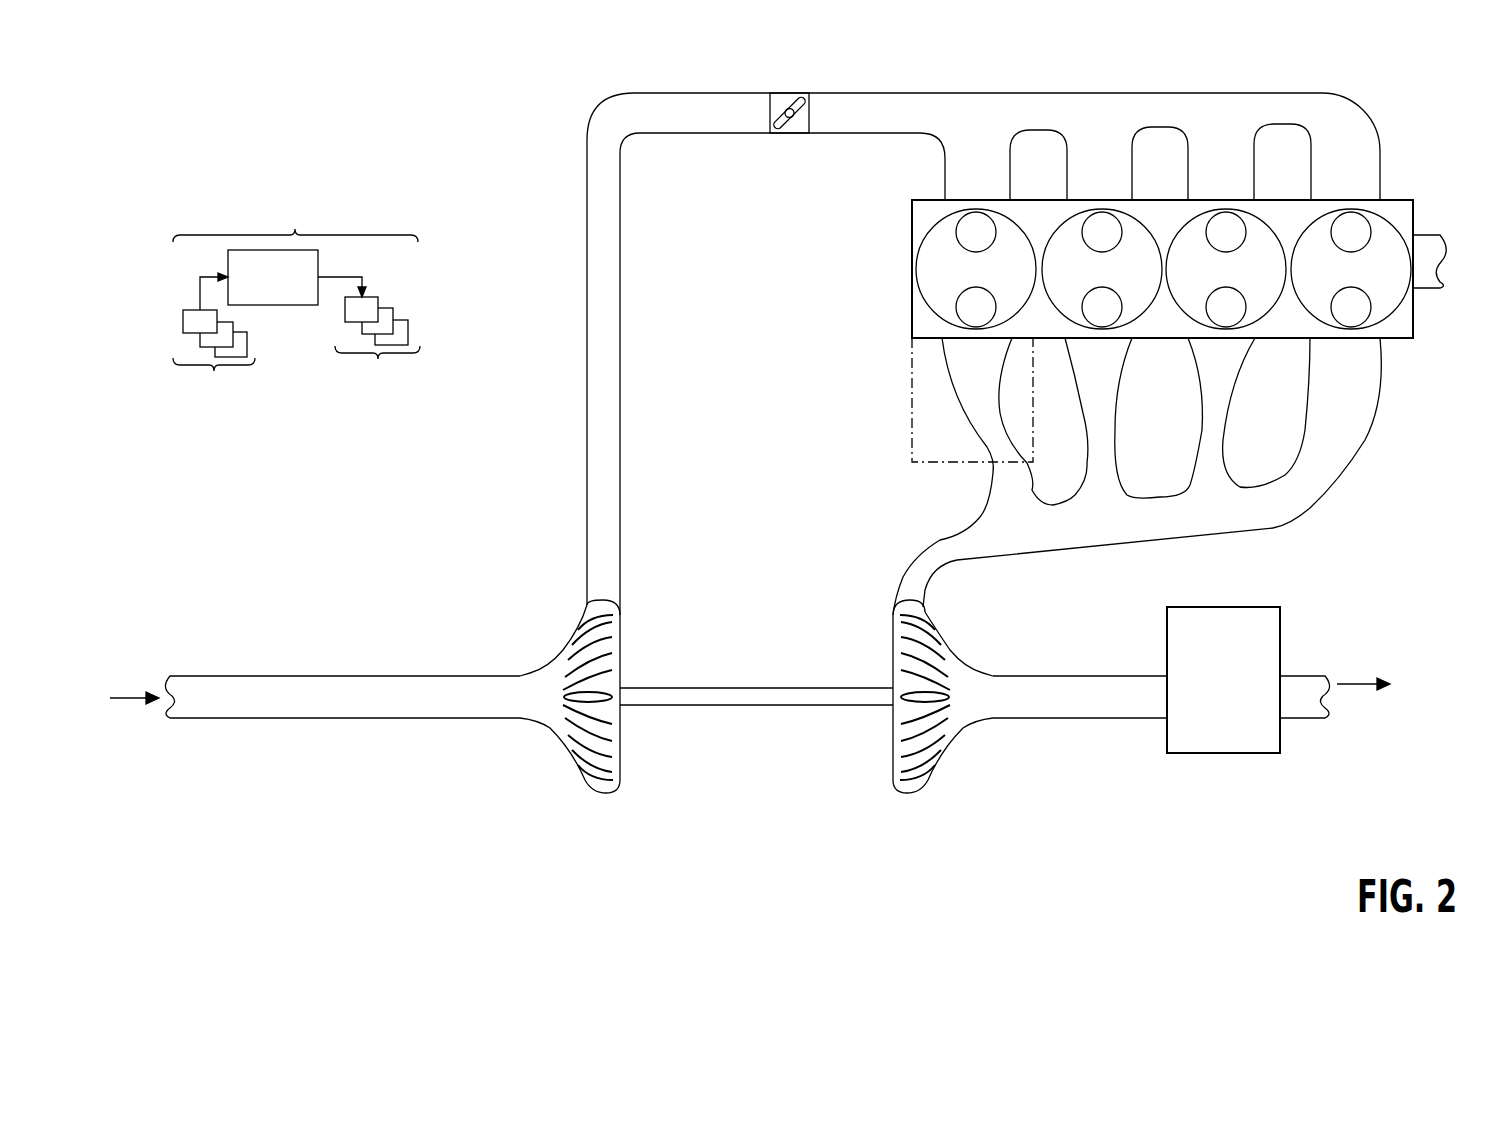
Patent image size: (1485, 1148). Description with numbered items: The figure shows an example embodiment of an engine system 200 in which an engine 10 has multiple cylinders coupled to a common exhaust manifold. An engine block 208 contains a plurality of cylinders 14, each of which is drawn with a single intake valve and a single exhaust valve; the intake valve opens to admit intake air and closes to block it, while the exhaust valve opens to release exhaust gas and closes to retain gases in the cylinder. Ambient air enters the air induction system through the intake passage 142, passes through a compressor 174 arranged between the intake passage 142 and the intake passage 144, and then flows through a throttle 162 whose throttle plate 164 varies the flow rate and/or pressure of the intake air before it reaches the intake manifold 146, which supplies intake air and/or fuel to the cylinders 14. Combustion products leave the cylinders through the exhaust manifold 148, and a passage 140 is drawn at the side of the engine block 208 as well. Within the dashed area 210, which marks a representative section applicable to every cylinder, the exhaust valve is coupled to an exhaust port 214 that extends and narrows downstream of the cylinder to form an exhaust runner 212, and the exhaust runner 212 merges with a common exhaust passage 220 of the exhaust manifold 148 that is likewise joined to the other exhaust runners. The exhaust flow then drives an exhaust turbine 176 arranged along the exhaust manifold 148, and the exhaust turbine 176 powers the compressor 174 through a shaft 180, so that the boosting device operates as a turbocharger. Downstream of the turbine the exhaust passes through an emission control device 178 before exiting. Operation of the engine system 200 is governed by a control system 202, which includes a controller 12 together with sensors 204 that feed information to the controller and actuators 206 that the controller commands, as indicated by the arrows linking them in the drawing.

The engine 10 is at (1428, 155).
The controller 12 is at (273, 277).
The cylinder 14 is at (966, 279).
The exhaust passage 140 is at (1427, 233).
The intake passage 142 is at (212, 675).
The intake passage 144 is at (587, 257).
The intake manifold 146 is at (1119, 139).
The exhaust manifold 148 is at (1143, 527).
The throttle 162 is at (767, 120).
The throttle plate 164 is at (807, 120).
The compressor 174 is at (558, 750).
The exhaust turbine 176 is at (948, 765).
The emission control device 178 is at (1213, 607).
The shaft 180 is at (725, 687).
The engine system 200 is at (512, 162).
The control system 202 is at (296, 308).
The sensors 204 is at (214, 347).
The actuators 206 is at (369, 339).
The engine block 208 is at (910, 233).
The dashed area 210 is at (910, 443).
The exhaust runner 212 is at (992, 440).
The exhaust port 214 is at (973, 345).
The common exhaust passage 220 is at (1017, 533).